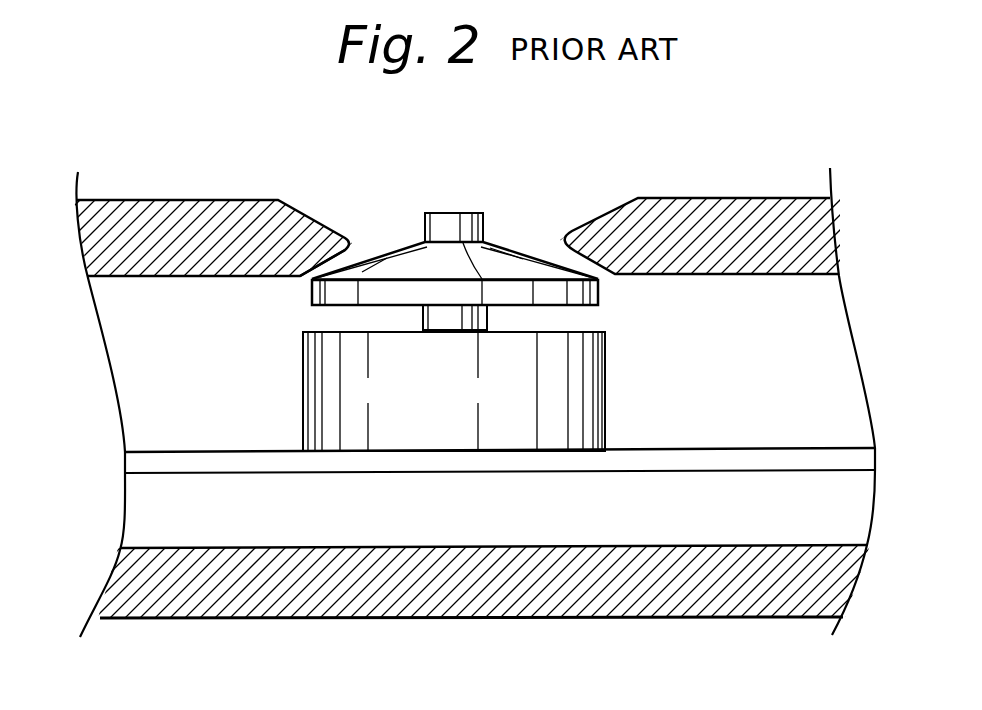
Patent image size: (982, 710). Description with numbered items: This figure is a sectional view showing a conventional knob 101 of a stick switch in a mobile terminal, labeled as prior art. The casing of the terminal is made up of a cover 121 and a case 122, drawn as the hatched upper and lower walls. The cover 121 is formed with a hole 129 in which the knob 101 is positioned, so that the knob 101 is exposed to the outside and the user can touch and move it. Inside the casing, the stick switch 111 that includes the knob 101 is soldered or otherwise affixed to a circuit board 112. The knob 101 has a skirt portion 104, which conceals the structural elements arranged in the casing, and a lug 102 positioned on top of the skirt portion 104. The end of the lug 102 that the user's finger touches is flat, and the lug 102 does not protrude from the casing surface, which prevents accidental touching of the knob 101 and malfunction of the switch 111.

The knob 101 is at (394, 242).
The lug 102 is at (485, 220).
The skirt portion 104 is at (520, 257).
The stick switch 111 is at (359, 433).
The circuit board 112 is at (208, 462).
The cover 121 is at (170, 200).
The case 122 is at (413, 618).
The hole 129 is at (367, 245).